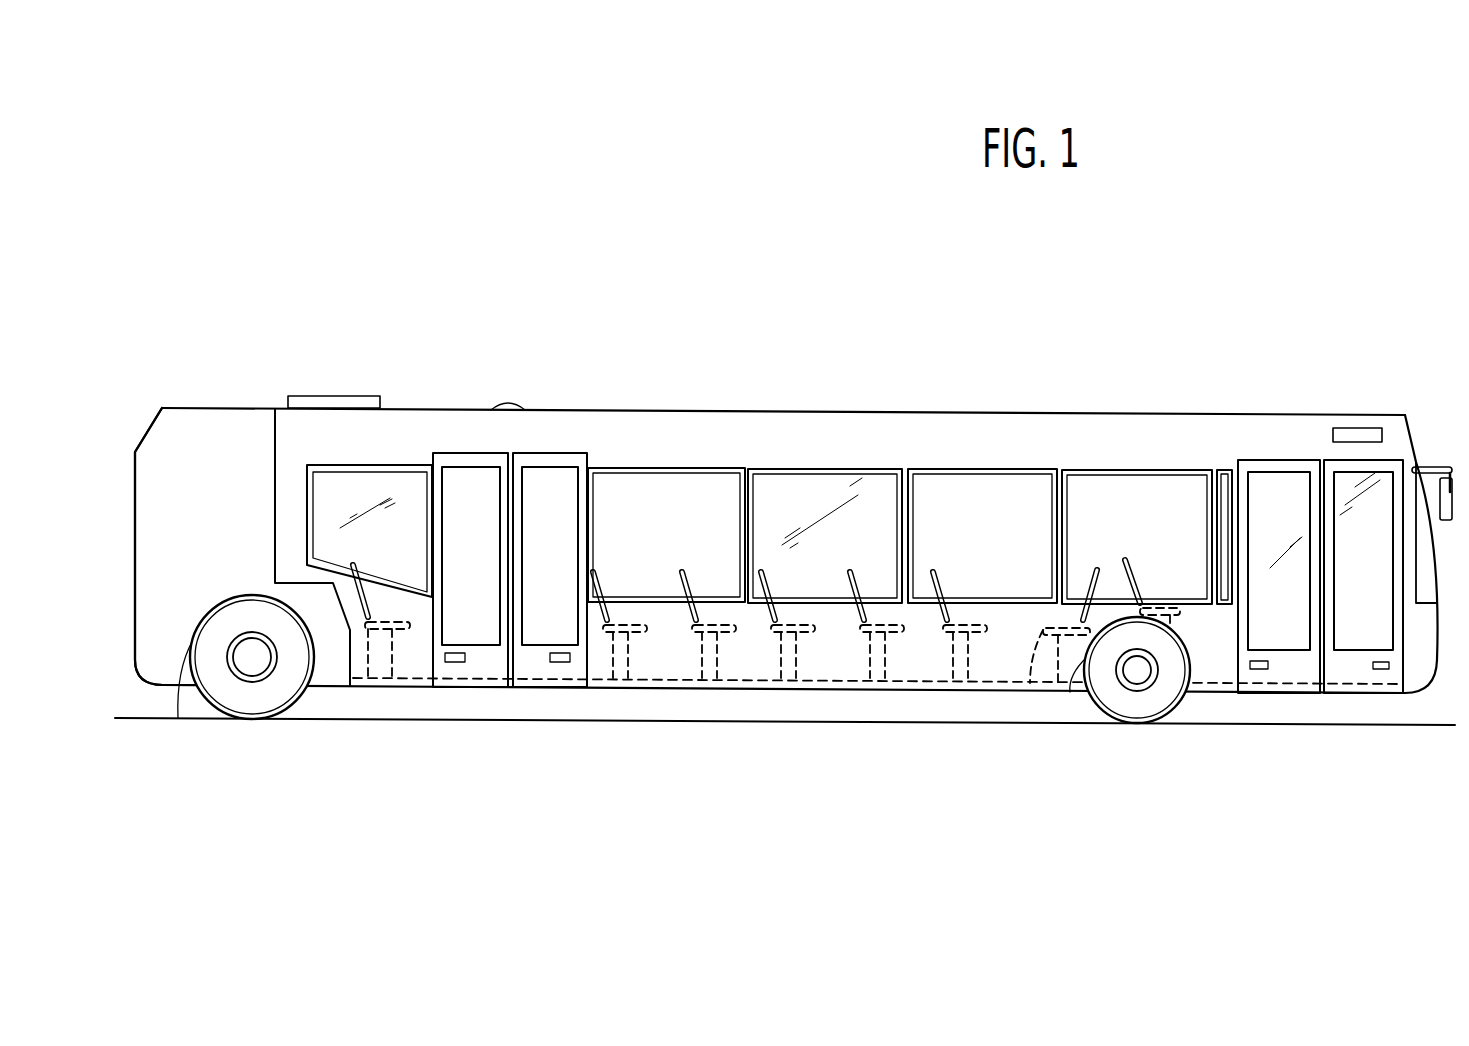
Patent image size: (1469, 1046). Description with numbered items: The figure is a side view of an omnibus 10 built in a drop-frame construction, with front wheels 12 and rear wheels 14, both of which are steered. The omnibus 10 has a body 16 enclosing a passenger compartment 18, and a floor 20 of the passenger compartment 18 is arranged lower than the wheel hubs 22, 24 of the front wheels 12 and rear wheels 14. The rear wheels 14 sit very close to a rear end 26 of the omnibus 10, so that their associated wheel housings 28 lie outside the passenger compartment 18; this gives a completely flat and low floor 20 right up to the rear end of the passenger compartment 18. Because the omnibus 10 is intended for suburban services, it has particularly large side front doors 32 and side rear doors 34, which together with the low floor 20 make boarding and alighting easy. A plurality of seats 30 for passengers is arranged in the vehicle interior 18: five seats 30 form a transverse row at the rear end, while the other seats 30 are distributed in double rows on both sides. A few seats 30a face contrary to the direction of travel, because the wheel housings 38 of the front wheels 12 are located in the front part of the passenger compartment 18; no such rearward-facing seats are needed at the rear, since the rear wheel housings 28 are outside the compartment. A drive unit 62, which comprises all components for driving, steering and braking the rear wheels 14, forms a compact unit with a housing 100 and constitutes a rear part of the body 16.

The omnibus 10 is at (915, 405).
The front wheels 12 is at (1130, 722).
The rear wheels 14 is at (235, 703).
The body 16 is at (807, 408).
The passenger compartment 18 is at (638, 487).
The floor 20 is at (653, 677).
The wheel hub 22 is at (1145, 677).
The wheel hub 24 is at (260, 653).
The rear end 26 is at (126, 442).
The wheel housings 28 is at (178, 718).
The seats 30 is at (407, 625).
The seats facing contrary to direction of travel 30a is at (1030, 683).
The side front doors 32 is at (1292, 668).
The side rear doors 34 is at (497, 672).
The wheel housings 38 is at (1070, 692).
The drive unit 62 is at (203, 403).
The housing 100 is at (253, 423).